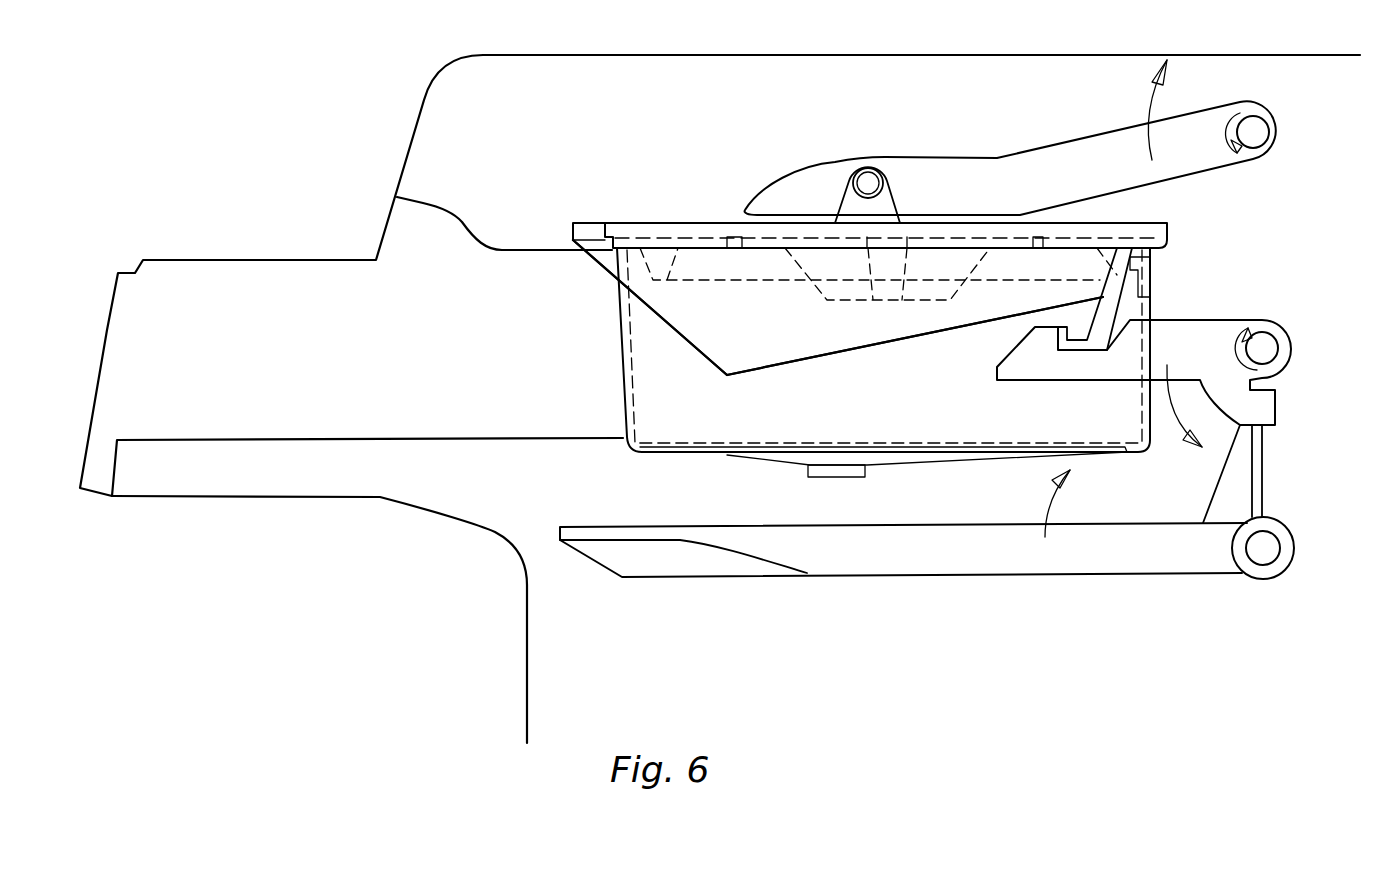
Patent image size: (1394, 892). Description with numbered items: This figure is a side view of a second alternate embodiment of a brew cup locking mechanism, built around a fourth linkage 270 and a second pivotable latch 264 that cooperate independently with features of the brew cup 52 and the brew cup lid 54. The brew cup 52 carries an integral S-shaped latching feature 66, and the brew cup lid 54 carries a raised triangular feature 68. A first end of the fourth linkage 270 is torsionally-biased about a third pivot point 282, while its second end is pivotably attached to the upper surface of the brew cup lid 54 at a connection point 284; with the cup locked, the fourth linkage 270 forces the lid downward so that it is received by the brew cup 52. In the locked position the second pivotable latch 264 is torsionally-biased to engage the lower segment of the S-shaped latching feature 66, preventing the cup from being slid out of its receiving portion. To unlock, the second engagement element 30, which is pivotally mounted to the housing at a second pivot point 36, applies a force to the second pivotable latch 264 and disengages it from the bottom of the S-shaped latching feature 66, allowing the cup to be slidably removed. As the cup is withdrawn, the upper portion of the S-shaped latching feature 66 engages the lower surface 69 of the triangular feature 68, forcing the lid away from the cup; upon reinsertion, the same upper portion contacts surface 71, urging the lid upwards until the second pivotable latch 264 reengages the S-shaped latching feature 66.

The second engagement element 30 is at (973, 557).
The second pivot point 36 is at (1263, 548).
The brew cup 52 is at (617, 305).
The brew cup lid 54 is at (628, 242).
The S-shaped latching feature 66 is at (1110, 308).
The raised triangular feature 68 is at (788, 343).
The lower surface 69 is at (840, 352).
The surface 71 is at (673, 330).
The second pivotable latch 264 is at (1218, 325).
The fourth linkage 270 is at (1102, 158).
The third pivot point 282 is at (1253, 132).
The connection point 284 is at (868, 185).